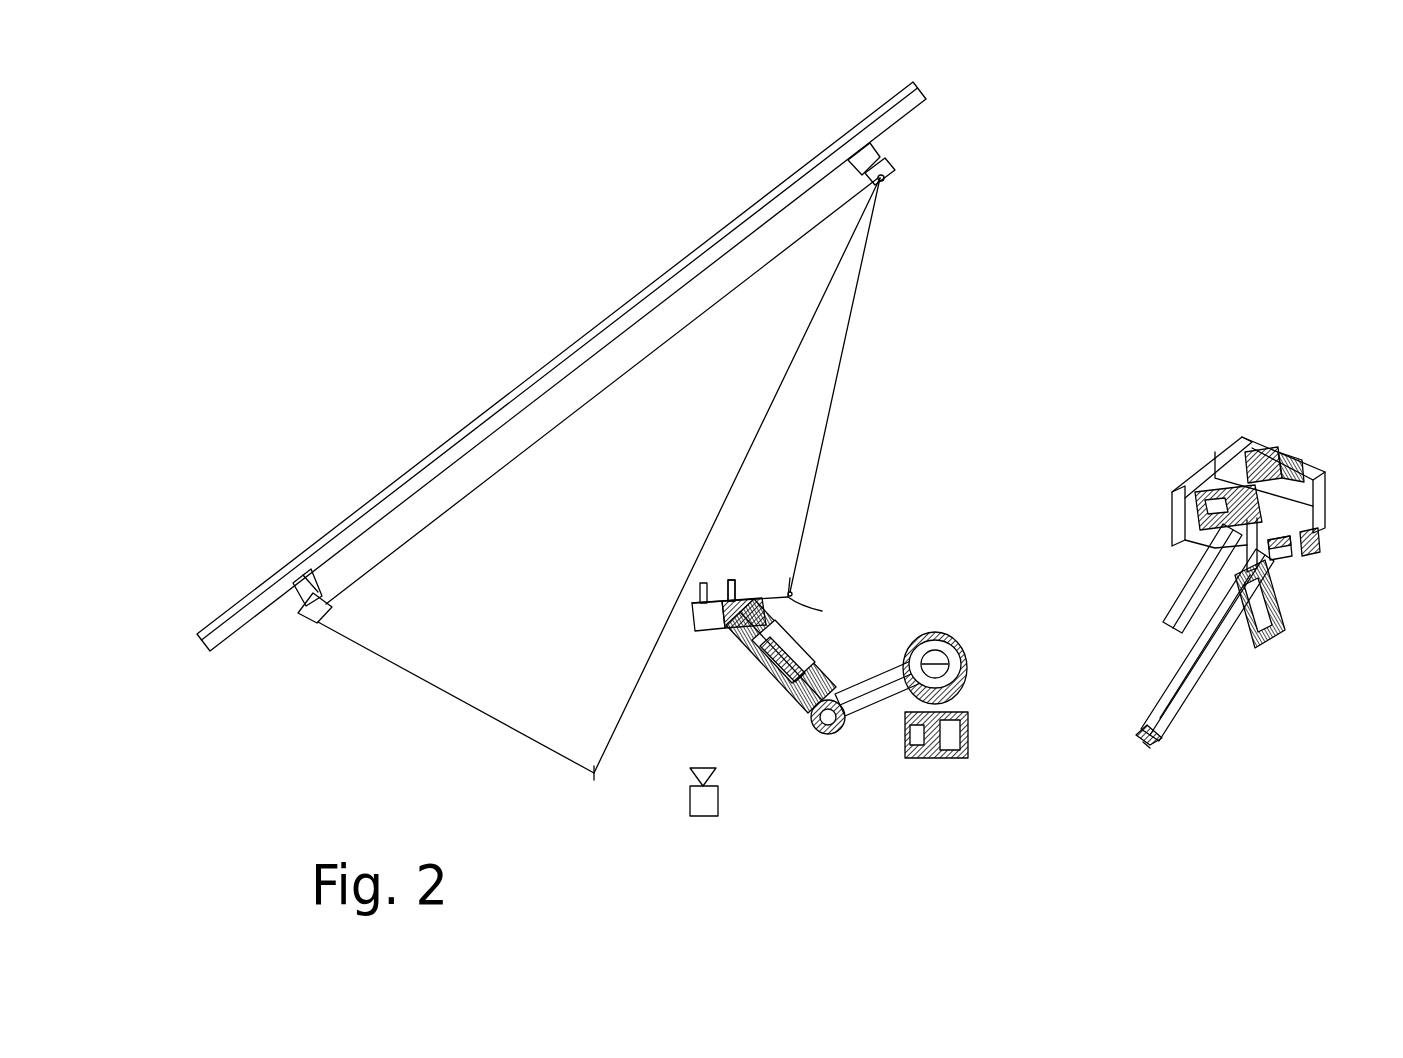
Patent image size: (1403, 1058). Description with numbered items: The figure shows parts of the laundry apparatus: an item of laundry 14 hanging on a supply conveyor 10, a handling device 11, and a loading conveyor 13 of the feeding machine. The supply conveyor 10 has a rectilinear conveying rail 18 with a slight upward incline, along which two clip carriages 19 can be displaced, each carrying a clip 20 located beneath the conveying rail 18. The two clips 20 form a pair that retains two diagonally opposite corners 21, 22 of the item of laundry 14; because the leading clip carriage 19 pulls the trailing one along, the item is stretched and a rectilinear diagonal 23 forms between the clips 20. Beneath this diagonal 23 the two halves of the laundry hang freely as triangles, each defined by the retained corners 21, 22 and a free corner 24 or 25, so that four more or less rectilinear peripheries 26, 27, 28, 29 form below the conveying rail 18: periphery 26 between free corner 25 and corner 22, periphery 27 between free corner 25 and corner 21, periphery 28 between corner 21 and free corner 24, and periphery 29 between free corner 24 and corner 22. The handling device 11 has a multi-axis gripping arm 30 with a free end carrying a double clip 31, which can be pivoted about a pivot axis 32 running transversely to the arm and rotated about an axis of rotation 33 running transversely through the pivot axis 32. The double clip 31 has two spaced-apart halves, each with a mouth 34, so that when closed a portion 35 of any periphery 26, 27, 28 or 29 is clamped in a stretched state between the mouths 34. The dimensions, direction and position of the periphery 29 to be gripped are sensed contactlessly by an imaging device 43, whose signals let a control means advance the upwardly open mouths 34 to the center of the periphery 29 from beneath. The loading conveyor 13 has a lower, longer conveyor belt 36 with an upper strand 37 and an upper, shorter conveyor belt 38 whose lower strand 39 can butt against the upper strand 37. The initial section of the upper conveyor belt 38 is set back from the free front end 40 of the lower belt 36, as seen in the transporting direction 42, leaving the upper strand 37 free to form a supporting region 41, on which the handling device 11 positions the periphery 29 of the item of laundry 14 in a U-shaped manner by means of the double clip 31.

The supply conveyor 10 is at (545, 250).
The handling device 11 is at (881, 764).
The loading conveyor 13 is at (1285, 697).
The item of laundry 14 is at (641, 512).
The conveying rail 18 is at (711, 253).
The clip carriage 19 is at (870, 160).
The clip 20 is at (893, 174).
The corner 21 is at (880, 197).
The corner 22 is at (312, 592).
The diagonal 23 is at (425, 522).
The free corner 24 is at (793, 591).
The free corner 25 is at (593, 778).
The periphery 26 is at (463, 702).
The periphery 27 is at (760, 435).
The periphery 28 is at (858, 315).
The periphery 29 is at (763, 603).
The gripping arm 30 is at (790, 674).
The double clip 31 is at (703, 616).
The pivot axis 32 is at (727, 642).
The axis of rotation 33 is at (816, 668).
The mouth 34 is at (738, 600).
The portion 35 is at (734, 580).
The conveyor belt 36 is at (1155, 595).
The upper strand 37 is at (1177, 667).
The conveyor belt 38 is at (1303, 604).
The lower strand 39 is at (1228, 600).
The front end 40 is at (1117, 718).
The supporting region 41 is at (1150, 706).
The transporting direction 42 is at (1213, 694).
The imaging device 43 is at (700, 818).